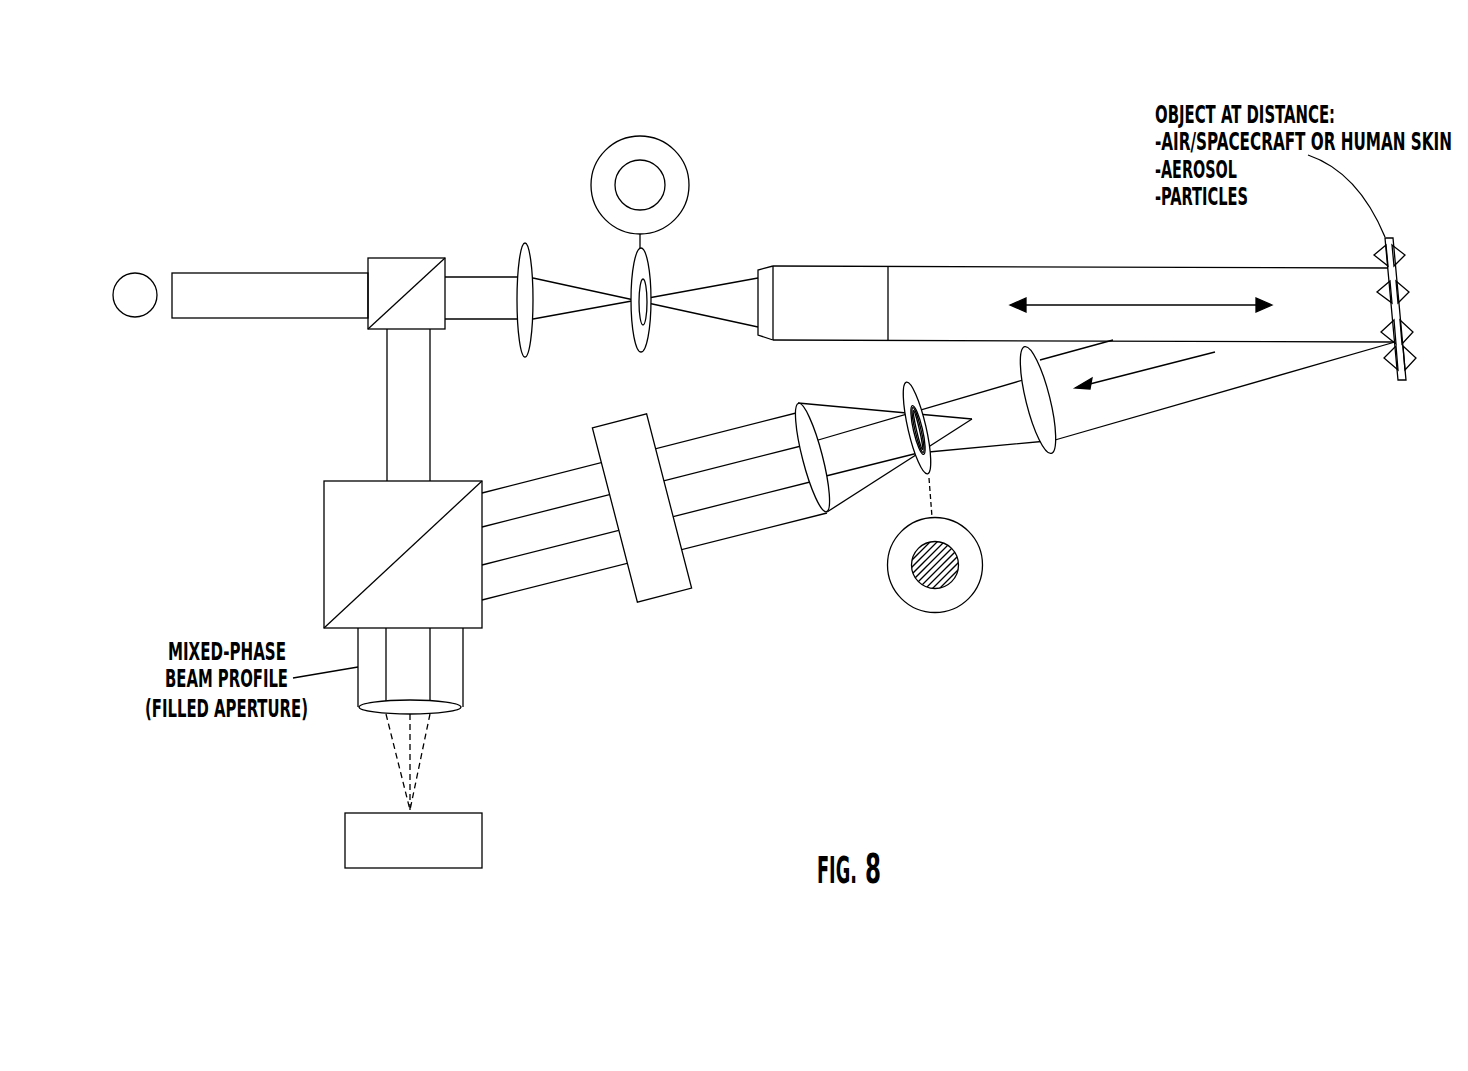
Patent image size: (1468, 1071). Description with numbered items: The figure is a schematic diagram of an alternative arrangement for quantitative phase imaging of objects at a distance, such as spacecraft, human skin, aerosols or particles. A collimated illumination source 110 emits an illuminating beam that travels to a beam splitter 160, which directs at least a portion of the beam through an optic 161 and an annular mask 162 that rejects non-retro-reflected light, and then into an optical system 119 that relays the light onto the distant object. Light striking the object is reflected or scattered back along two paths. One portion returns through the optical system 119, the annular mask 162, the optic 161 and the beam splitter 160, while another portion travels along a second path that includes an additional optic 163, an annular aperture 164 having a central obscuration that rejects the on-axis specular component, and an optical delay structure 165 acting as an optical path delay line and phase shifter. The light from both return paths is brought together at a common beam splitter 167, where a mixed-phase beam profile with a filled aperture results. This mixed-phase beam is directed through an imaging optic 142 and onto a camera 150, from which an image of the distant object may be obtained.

The collimated illumination source 110 is at (161, 255).
The beam splitter 160 is at (416, 258).
The annular mask 162 is at (690, 173).
The optical system 119 is at (863, 266).
The optic 161 is at (1024, 358).
The beam splitter 167 is at (324, 510).
The optics 163 is at (1052, 453).
The optical delay structure 165 is at (672, 597).
The annular aperture 164 is at (941, 585).
The imaging optic 142 is at (452, 713).
The camera 150 is at (468, 857).